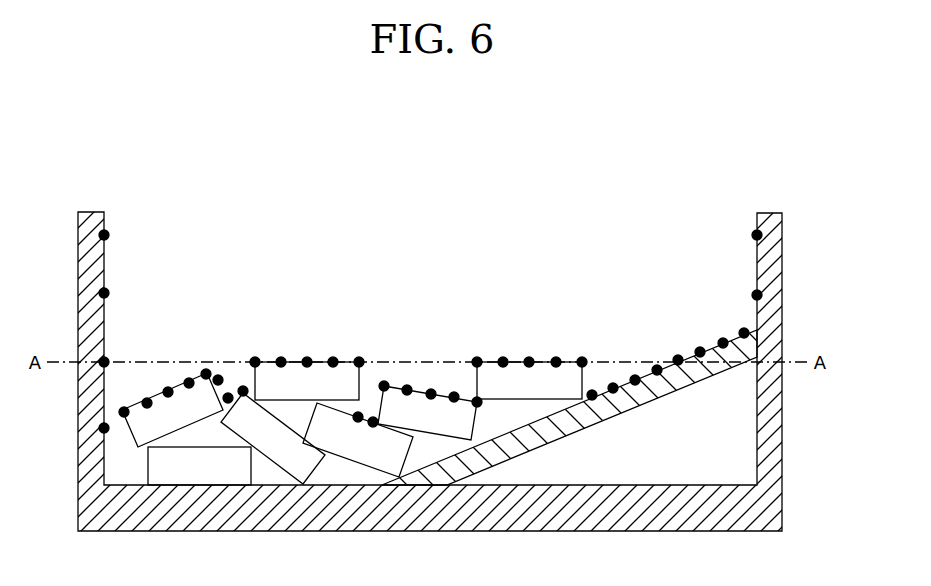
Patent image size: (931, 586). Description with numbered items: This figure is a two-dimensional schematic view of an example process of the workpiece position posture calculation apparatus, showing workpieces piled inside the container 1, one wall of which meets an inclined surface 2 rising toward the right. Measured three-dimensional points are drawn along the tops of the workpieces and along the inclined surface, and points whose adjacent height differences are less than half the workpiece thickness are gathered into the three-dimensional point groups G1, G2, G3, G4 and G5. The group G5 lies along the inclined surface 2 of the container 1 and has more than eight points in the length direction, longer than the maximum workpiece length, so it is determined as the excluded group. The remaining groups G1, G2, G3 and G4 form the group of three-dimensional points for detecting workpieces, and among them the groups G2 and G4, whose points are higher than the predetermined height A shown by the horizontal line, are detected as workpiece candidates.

The container 1 is at (782, 272).
The inclined surface 2 is at (658, 397).
The three-dimensional point group G1 is at (183, 363).
The three-dimensional point group G2 is at (307, 332).
The three-dimensional point group G3 is at (430, 371).
The three-dimensional point group G4 is at (529, 333).
The three-dimensional point group G5 is at (668, 353).